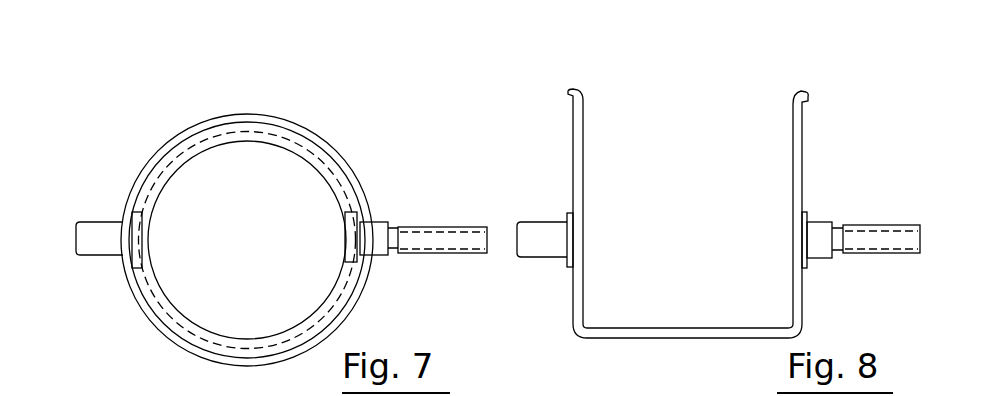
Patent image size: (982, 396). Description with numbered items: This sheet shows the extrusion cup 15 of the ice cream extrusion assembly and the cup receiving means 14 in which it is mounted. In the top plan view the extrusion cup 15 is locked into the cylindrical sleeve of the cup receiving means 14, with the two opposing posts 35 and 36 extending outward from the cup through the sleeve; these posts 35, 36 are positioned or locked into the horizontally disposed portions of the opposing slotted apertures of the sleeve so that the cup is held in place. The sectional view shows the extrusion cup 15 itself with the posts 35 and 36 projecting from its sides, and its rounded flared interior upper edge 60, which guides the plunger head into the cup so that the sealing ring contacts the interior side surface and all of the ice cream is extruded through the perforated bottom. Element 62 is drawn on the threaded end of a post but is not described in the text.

In FIG. 7, the cup receiving means 14 is at (187, 122).
In FIG. 7, the extrusion cup 15 is at (313, 313).
In FIG. 8, the extrusion cup 15 is at (583, 143).
In FIG. 7, the post 35 is at (380, 235).
In FIG. 8, the post 35 is at (818, 235).
In FIG. 7, the post 36 is at (108, 233).
In FIG. 8, the post 36 is at (545, 238).
In FIG. 8, the rounded flared interior upper edge 60 is at (574, 92).
In FIG. 7, the threaded shaft 62 is at (417, 238).
In FIG. 8, the threaded shaft 62 is at (862, 237).